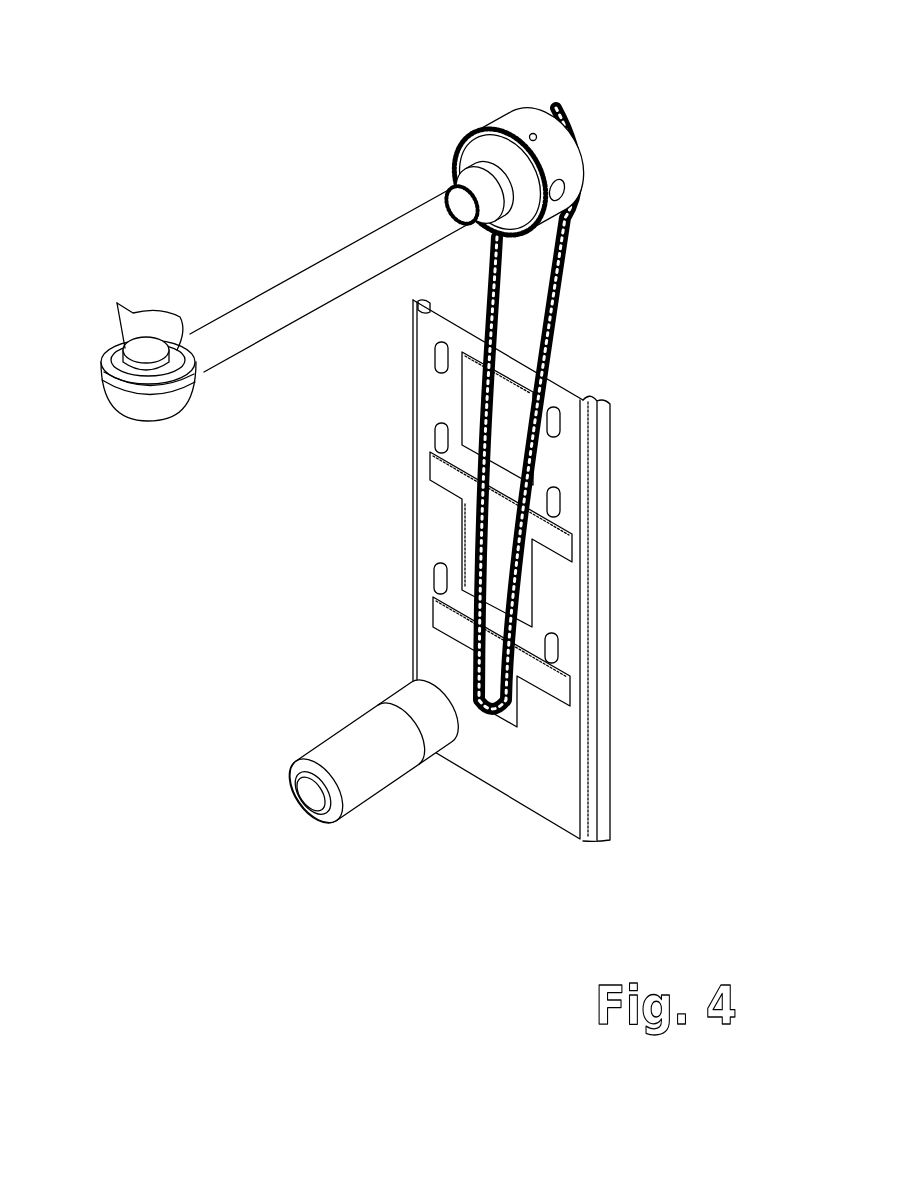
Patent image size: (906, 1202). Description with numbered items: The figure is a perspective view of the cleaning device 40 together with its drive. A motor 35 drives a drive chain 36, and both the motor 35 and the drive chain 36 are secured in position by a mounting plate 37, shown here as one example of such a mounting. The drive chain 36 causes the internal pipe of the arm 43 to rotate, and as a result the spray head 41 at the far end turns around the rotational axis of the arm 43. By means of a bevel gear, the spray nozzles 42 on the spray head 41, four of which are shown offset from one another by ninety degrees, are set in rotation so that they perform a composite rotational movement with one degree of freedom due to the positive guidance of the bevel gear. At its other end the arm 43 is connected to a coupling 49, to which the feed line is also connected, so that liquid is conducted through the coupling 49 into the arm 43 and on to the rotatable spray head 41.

The cleaning device 40 is at (372, 118).
The coupling 49 is at (500, 112).
The arm 43 is at (290, 266).
The spray nozzles 42 is at (134, 313).
The spray head 41 is at (167, 428).
The drive chain 36 is at (577, 291).
The mounting plate 37 is at (597, 603).
The motor 35 is at (383, 773).